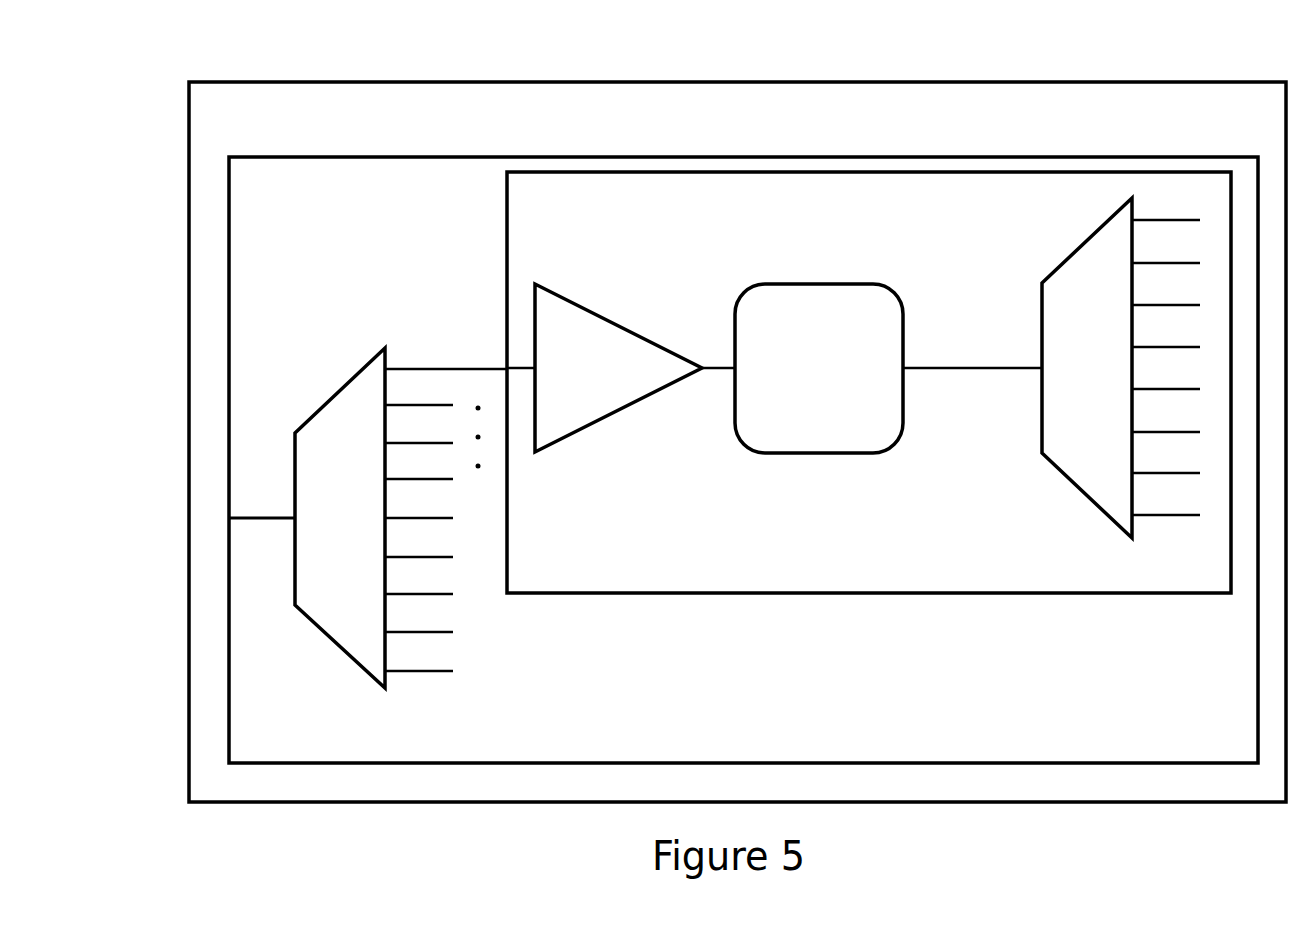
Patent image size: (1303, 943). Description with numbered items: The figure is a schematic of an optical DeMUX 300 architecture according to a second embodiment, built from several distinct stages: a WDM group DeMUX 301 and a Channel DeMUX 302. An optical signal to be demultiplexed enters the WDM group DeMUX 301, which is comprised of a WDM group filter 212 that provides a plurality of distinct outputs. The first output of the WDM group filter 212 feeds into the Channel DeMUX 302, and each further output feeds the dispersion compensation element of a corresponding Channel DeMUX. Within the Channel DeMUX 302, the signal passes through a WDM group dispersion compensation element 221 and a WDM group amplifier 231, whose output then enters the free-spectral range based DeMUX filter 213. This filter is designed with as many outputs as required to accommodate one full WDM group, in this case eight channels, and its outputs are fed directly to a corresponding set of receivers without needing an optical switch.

The optical DeMUX 300 is at (541, 52).
The WDM group DeMUX 301 is at (386, 126).
The Channel DeMUX 302 is at (943, 138).
The WDM group filter 212 is at (362, 528).
The WDM group amplifier 231 is at (639, 380).
The WDM group dispersion compensation element 221 is at (841, 402).
The free-spectral range (FSR) based DeMUX filter 213 is at (1109, 380).